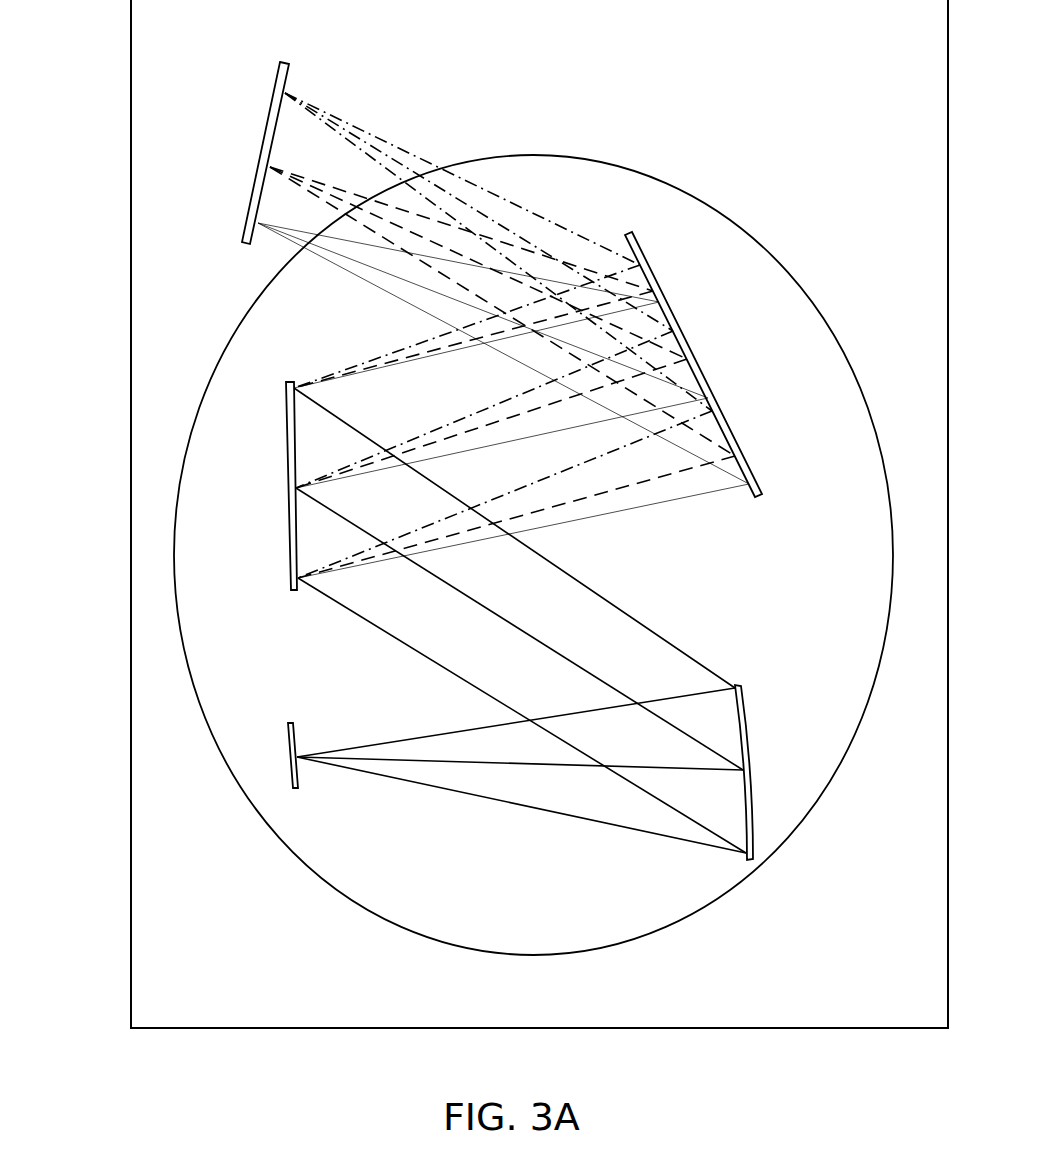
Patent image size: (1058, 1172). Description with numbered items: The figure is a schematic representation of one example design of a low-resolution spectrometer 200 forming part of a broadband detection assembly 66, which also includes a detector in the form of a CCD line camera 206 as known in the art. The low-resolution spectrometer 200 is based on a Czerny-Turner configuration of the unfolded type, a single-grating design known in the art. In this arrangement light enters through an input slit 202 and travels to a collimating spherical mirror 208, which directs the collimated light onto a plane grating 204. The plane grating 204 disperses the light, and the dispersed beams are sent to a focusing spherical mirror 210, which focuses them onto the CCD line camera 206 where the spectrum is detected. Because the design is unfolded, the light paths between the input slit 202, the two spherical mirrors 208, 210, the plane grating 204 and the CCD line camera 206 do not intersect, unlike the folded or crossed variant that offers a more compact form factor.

The broadband detection assembly 66 is at (131, 99).
The low-resolution spectrometer 200 is at (739, 225).
The input slit 202 is at (290, 738).
The plane grating 204 is at (288, 532).
The CCD line camera 206 is at (262, 140).
The collimating spherical mirror 208 is at (750, 732).
The focusing spherical mirror 210 is at (721, 410).